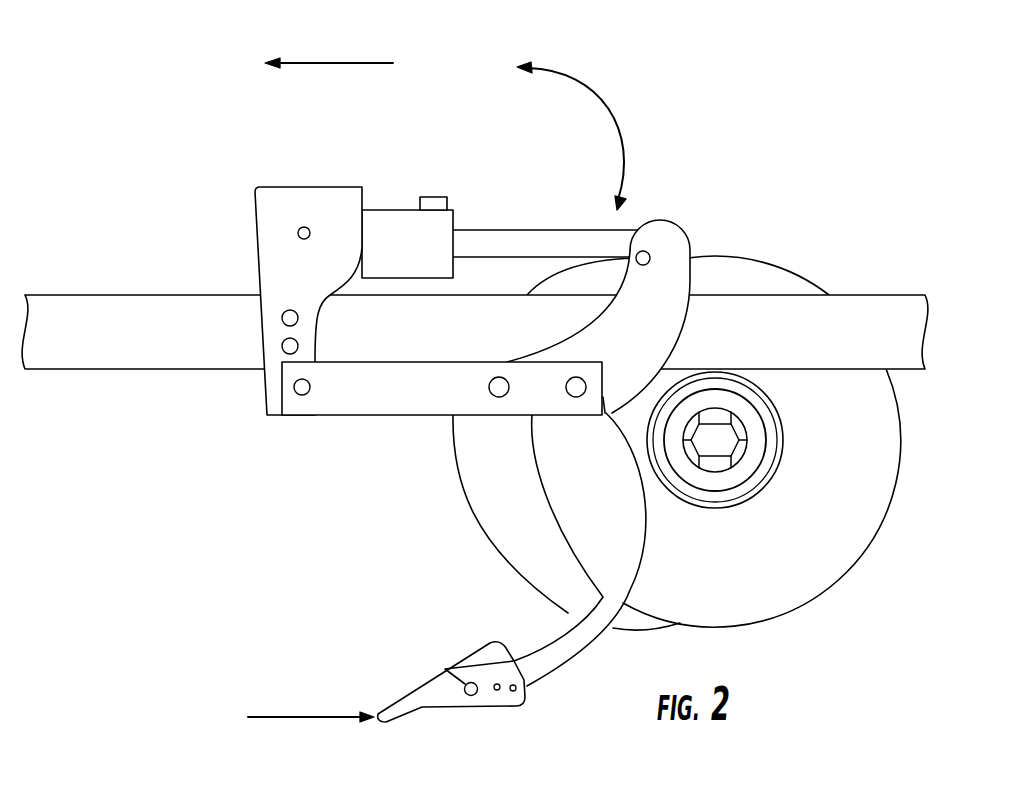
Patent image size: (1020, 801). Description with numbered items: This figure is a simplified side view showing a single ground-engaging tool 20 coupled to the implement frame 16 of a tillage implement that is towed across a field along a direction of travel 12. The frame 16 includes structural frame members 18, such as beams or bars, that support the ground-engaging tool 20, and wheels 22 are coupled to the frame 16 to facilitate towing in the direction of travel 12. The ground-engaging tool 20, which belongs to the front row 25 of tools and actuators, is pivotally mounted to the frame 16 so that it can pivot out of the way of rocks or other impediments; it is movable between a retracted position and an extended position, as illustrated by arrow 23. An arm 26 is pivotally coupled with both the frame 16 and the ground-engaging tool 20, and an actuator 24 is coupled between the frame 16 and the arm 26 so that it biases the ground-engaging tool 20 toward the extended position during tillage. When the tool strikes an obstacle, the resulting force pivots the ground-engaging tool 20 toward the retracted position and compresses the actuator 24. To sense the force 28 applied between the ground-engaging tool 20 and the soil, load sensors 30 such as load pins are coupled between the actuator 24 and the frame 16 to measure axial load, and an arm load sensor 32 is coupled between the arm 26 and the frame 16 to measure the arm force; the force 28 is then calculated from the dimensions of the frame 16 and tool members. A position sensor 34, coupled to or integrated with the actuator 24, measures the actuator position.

The direction of travel 12 is at (333, 63).
The implement frame 16 is at (475, 283).
The structural frame members 18 is at (93, 295).
The ground-engaging tool 20 is at (512, 582).
The wheels 22 is at (483, 542).
The arrow 23 is at (568, 72).
The actuator 24 is at (506, 190).
The front row 25 is at (460, 710).
The arm 26 is at (417, 423).
The force 28 is at (323, 718).
The load sensors 30 is at (304, 227).
The arm load sensor 32 is at (300, 393).
The position sensors 34 is at (433, 197).